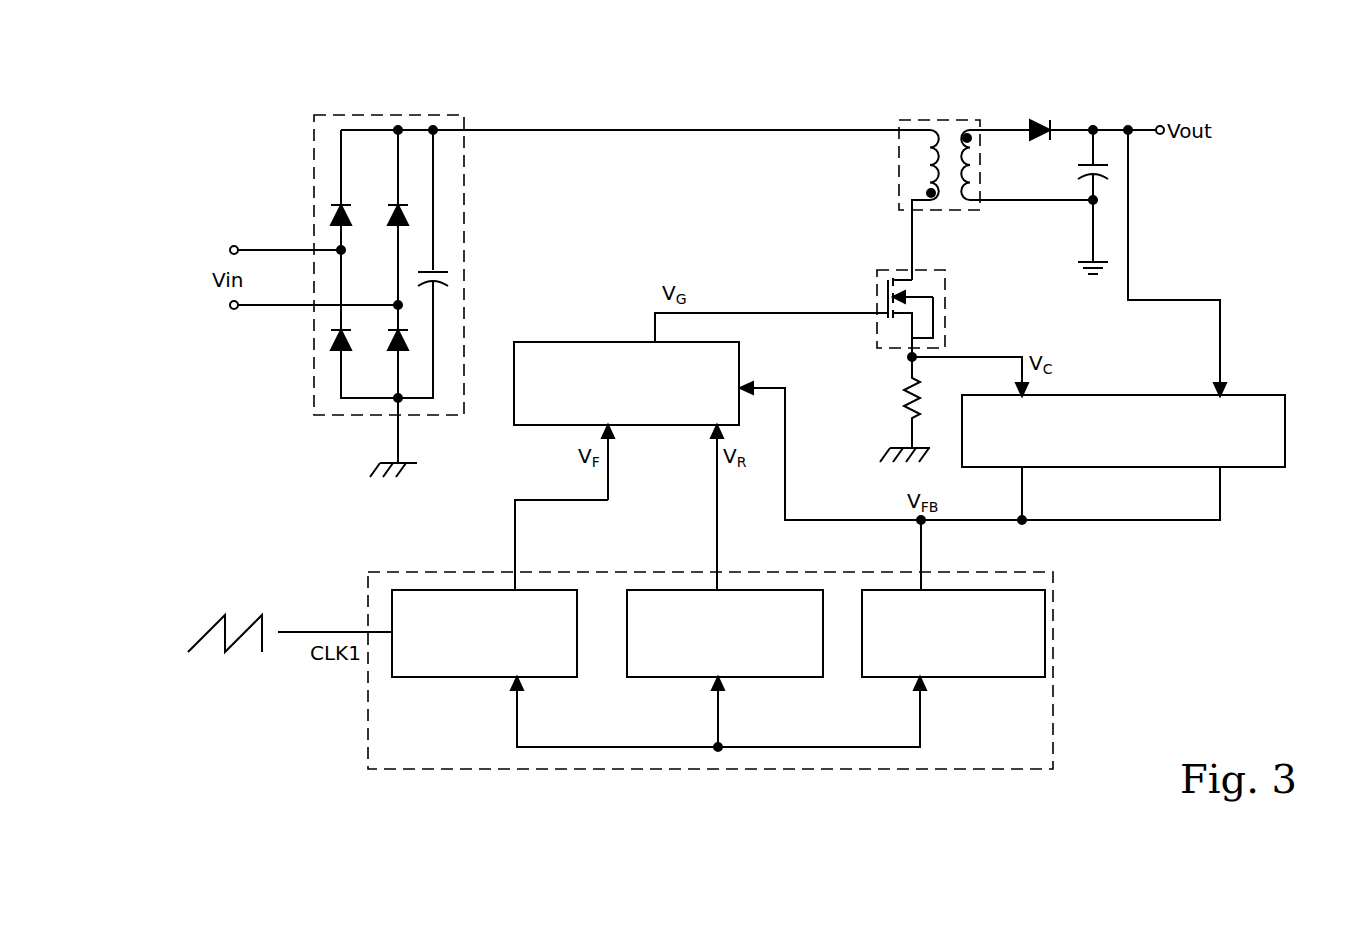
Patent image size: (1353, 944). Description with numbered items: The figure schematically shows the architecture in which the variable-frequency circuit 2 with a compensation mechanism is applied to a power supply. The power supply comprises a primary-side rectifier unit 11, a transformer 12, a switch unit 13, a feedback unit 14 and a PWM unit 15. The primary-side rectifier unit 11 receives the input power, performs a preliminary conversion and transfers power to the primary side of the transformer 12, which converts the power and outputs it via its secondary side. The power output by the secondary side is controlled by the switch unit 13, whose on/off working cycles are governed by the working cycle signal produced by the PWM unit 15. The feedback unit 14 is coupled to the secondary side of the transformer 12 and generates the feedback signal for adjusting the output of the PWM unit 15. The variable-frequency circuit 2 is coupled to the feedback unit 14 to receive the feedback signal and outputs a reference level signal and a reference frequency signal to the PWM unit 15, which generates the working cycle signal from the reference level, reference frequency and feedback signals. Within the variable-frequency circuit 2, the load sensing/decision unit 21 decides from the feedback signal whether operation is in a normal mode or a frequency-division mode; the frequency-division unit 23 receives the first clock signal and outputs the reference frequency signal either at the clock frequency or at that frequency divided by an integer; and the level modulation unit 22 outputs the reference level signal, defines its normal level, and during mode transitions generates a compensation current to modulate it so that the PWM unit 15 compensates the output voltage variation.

The variable-frequency circuit 2 is at (710, 703).
The primary-side rectifier unit 11 is at (352, 123).
The transformer 12 is at (942, 128).
The switch unit 13 is at (880, 281).
The feedback unit 14 is at (1255, 408).
The PWM unit 15 is at (649, 412).
The load sensing/decision unit 21 is at (998, 662).
The level modulation unit 22 is at (747, 662).
The frequency-division unit 23 is at (545, 662).